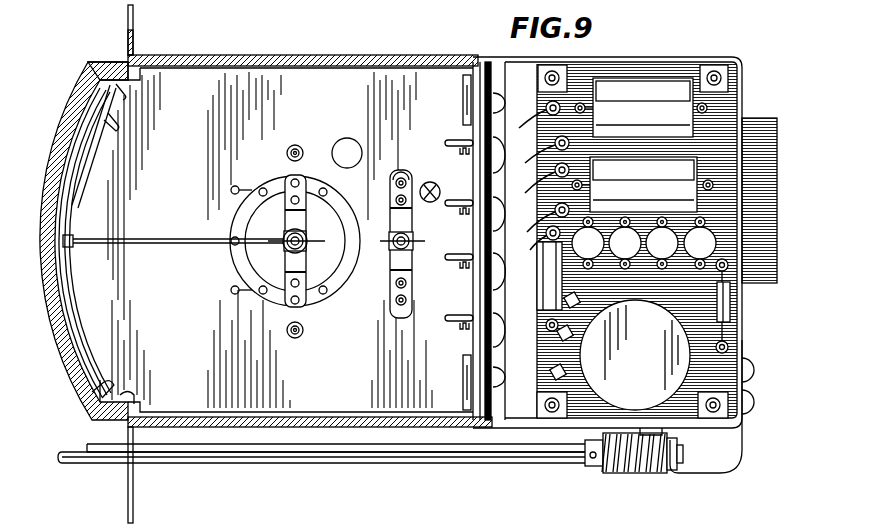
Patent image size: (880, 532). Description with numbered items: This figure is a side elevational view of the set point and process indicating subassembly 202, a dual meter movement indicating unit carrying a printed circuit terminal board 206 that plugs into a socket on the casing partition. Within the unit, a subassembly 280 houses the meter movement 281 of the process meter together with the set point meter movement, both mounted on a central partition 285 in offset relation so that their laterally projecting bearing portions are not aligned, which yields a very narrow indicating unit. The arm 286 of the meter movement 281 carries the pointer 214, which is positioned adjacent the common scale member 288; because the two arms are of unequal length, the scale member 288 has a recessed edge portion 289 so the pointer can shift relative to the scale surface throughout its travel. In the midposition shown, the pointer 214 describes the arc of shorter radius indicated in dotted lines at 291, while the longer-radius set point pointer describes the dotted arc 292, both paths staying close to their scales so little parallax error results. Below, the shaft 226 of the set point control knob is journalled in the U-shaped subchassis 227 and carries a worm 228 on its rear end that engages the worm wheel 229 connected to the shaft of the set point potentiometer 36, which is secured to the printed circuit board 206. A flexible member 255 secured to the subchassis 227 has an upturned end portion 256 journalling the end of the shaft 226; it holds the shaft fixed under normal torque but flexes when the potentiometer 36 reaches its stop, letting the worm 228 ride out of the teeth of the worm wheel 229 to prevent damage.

The set point potentiometer 36 is at (640, 366).
The indicating subassembly 202 is at (65, 370).
The printed circuit terminal board 206 is at (752, 120).
The pointer 214 is at (63, 240).
The shaft 226 is at (210, 463).
The U-shaped subchassis 227 is at (470, 62).
The worm 228 is at (635, 480).
The worm wheel 229 is at (662, 432).
The flexible member 255 is at (728, 470).
The upturned end portion 256 is at (677, 456).
The subassembly 280 is at (352, 50).
The meter movement 281 is at (310, 302).
The central partition 285 is at (222, 82).
The arm 286 is at (142, 243).
The scale member 288 is at (78, 330).
The recessed edge portion 289 is at (96, 342).
The arc 291 is at (70, 205).
The arc 292 is at (90, 80).